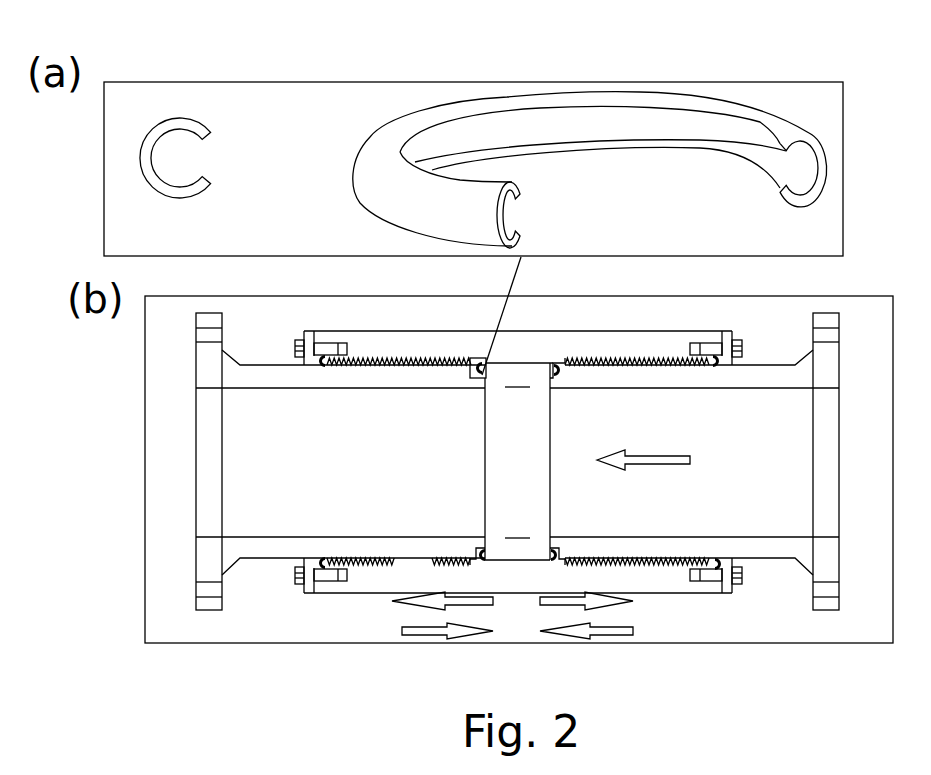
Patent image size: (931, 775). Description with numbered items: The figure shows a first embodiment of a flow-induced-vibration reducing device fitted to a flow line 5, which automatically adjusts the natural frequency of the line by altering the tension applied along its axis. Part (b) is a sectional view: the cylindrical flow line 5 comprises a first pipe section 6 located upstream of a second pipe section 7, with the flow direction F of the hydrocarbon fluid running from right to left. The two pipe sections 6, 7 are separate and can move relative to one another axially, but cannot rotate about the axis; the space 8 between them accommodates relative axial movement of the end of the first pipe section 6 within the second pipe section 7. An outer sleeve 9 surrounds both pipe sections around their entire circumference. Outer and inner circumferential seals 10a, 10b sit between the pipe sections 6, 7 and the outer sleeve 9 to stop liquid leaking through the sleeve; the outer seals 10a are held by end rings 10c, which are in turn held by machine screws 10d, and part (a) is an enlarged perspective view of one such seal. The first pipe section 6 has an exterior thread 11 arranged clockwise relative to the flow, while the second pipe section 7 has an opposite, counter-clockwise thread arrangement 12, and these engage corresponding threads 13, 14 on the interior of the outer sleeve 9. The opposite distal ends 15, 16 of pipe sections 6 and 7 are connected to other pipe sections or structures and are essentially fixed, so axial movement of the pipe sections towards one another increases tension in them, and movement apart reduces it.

The flow line 5 is at (175, 577).
The first pipe section 6 is at (782, 548).
The second pipe section 7 is at (230, 369).
The space 8 is at (526, 463).
The outer sleeve 9 is at (643, 580).
The outer circumferential seals 10a is at (321, 366).
The inner circumferential seals 10b is at (480, 380).
The end rings 10c is at (307, 595).
The machine screws 10d is at (742, 352).
The thread 11 is at (665, 376).
The thread arrangement 12 is at (392, 557).
The thread 13 is at (580, 362).
The thread 14 is at (360, 566).
The distal end 15 is at (842, 558).
The distal end 16 is at (204, 548).
The flow direction F is at (655, 459).